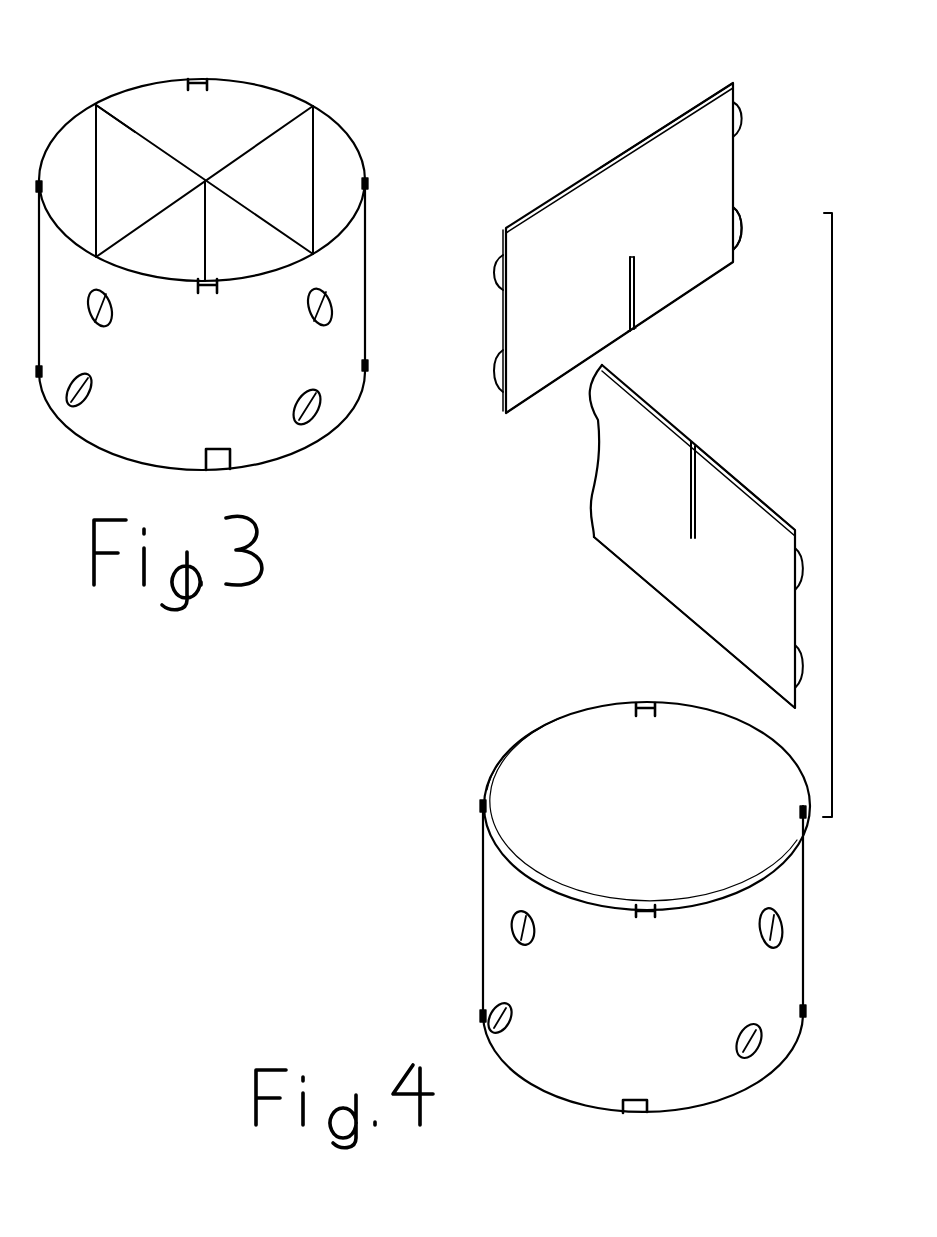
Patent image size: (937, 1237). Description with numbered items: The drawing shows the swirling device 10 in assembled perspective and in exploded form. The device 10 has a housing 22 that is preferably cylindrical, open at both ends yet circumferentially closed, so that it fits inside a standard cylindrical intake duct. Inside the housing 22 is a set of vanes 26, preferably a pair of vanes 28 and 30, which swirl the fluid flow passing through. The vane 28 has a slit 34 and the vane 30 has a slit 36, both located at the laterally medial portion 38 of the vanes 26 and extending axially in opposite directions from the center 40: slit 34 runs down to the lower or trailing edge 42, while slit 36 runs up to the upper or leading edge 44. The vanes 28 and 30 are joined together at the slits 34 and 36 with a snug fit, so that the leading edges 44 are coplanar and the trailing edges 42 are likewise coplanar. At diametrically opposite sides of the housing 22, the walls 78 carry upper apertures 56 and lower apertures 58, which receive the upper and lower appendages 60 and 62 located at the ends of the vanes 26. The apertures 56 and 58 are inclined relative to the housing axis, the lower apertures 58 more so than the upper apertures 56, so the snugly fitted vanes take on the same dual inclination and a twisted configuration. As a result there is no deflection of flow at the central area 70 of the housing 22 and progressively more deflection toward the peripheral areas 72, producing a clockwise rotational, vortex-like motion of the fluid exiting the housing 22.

In FIG. 3, the swirling device 10 is at (363, 68).
In FIG. 4, the swirling device 10 is at (791, 98).
In FIG. 3, the housing 22 is at (361, 144).
In FIG. 4, the housing 22 is at (475, 857).
In FIG. 3, the set of vanes 26 is at (207, 172).
In FIG. 4, the vane 28 is at (658, 181).
In FIG. 4, the vane 30 is at (726, 553).
In FIG. 4, the slit 34 is at (633, 331).
In FIG. 4, the slit 36 is at (695, 445).
In FIG. 4, the laterally medial portion 38 is at (610, 234).
In FIG. 4, the center 40 is at (646, 239).
In FIG. 4, the trailing edge 42 is at (550, 395).
In FIG. 3, the leading edge 44 is at (138, 120).
In FIG. 4, the leading edge 44 is at (650, 131).
In FIG. 4, the upper apertures 56 is at (778, 922).
In FIG. 4, the lower apertures 58 is at (765, 1035).
In FIG. 3, the upper appendages 60 is at (323, 298).
In FIG. 4, the upper appendages 60 is at (588, 412).
In FIG. 3, the lower appendages 62 is at (309, 413).
In FIG. 4, the lower appendages 62 is at (738, 218).
In FIG. 4, the central area 70 is at (644, 793).
In FIG. 4, the peripheral areas 72 is at (509, 774).
In FIG. 4, the walls 78 is at (482, 905).